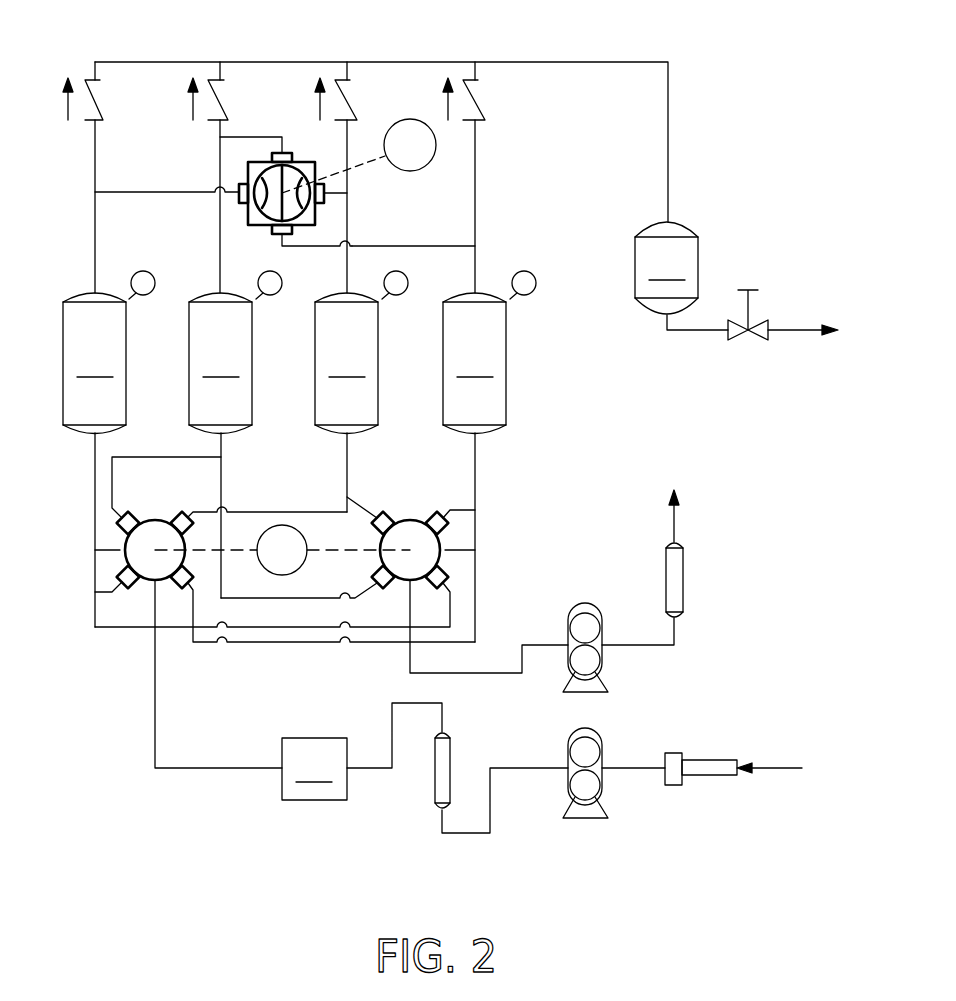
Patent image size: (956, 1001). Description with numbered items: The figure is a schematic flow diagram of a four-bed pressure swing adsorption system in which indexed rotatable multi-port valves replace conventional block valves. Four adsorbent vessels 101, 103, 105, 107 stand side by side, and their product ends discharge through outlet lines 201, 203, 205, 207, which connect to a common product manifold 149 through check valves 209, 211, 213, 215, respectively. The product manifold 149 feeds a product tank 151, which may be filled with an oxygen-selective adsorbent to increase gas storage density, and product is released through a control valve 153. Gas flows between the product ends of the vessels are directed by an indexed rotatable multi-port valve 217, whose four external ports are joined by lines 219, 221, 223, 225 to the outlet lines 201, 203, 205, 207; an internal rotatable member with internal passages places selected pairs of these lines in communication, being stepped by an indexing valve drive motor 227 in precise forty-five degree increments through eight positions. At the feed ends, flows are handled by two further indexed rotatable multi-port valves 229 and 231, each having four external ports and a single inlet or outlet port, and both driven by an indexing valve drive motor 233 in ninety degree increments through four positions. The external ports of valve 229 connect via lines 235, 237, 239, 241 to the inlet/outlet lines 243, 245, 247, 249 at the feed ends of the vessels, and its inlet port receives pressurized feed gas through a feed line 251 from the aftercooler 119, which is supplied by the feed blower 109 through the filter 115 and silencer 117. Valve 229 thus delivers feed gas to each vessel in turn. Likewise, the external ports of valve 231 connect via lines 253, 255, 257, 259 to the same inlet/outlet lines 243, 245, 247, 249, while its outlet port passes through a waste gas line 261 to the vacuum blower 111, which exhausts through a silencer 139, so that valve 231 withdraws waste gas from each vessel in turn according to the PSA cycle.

The adsorbent vessel 101 is at (109, 352).
The adsorbent vessel 103 is at (235, 352).
The adsorbent vessel 105 is at (361, 352).
The adsorbent vessel 107 is at (489, 352).
The feed blower 109 is at (600, 735).
The vacuum blower 111 is at (580, 603).
The filter 115 is at (710, 778).
The silencer 117 is at (430, 778).
The aftercooler 119 is at (314, 769).
The silencer 139 is at (683, 580).
The product manifold 149 is at (380, 62).
The product tank 151 is at (666, 268).
The control valve 153 is at (760, 341).
The outlet line 201 is at (95, 260).
The outlet line 203 is at (220, 224).
The outlet line 205 is at (378, 246).
The outlet line 207 is at (475, 214).
The check valve 209 is at (104, 90).
The check valve 211 is at (228, 100).
The check valve 213 is at (357, 102).
The check valve 215 is at (485, 103).
The indexed rotatable multi-port valve 217 is at (302, 161).
The line 219 is at (118, 192).
The line 221 is at (220, 137).
The line 223 is at (342, 195).
The line 225 is at (289, 247).
The indexing valve drive motor 227 is at (436, 145).
The indexed rotatable multi-port valve 229 is at (112, 550).
The indexed rotatable multi-port valve 231 is at (450, 550).
The indexing valve drive motor 233 is at (297, 526).
The line 235 is at (101, 592).
The line 237 is at (142, 458).
The line 239 is at (330, 512).
The line 241 is at (300, 642).
The inlet/outlet line 243 is at (95, 480).
The inlet/outlet line 245 is at (221, 447).
The inlet/outlet line 247 is at (347, 455).
The inlet/outlet line 249 is at (475, 455).
The feed line 251 is at (153, 722).
The line 253 is at (320, 627).
The line 255 is at (358, 593).
The line 257 is at (362, 505).
The line 259 is at (468, 510).
The waste gas line 261 is at (480, 673).